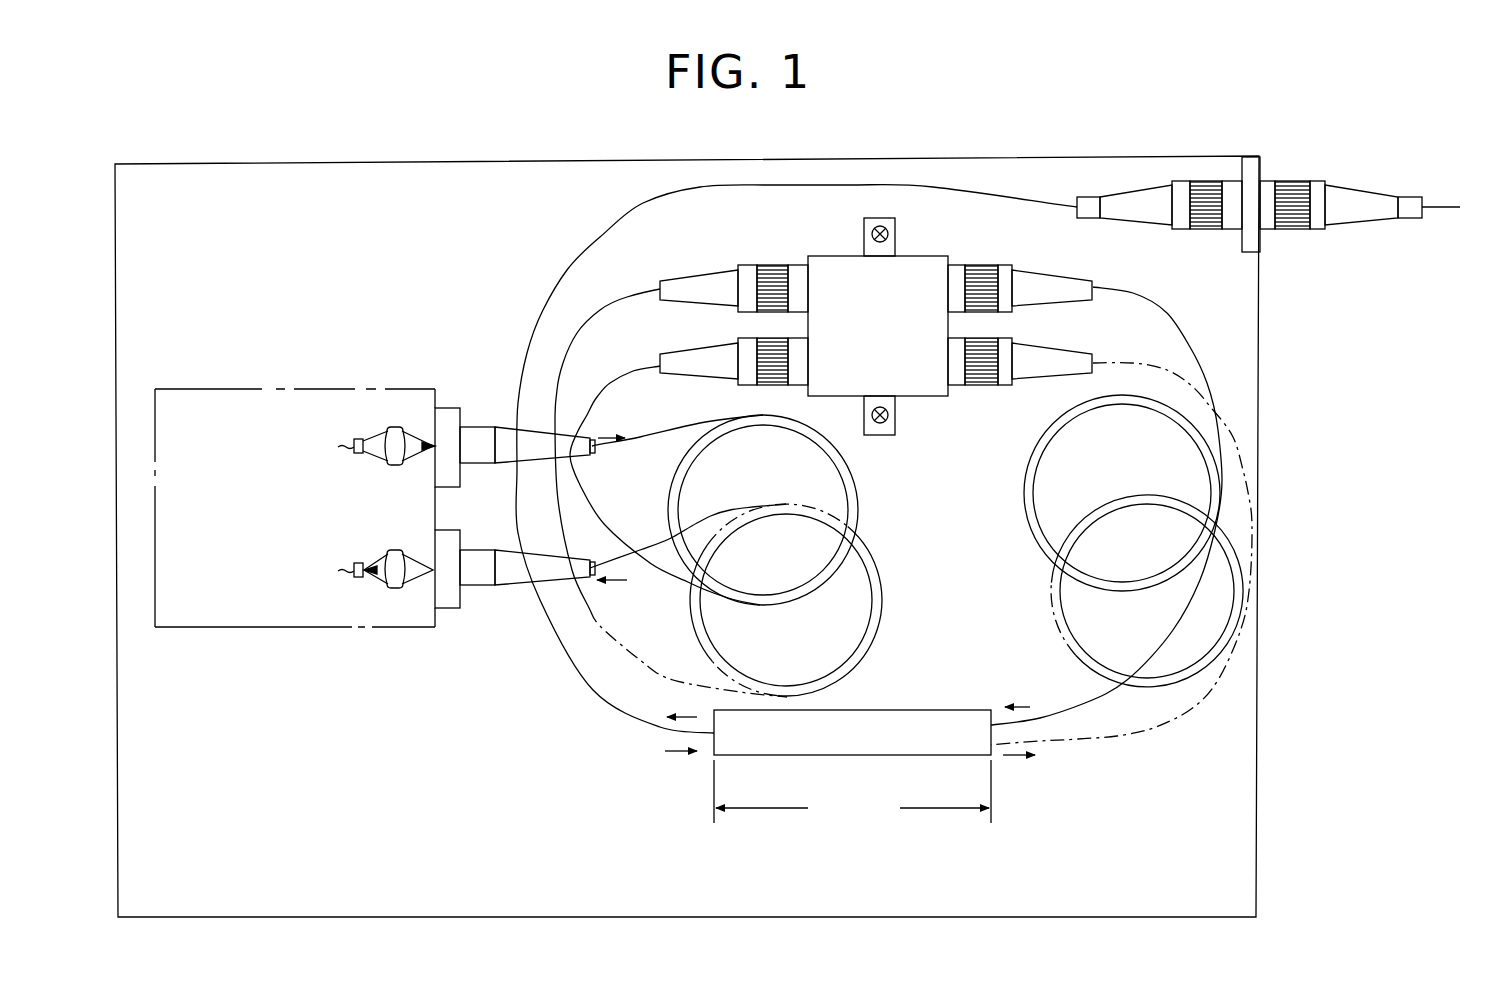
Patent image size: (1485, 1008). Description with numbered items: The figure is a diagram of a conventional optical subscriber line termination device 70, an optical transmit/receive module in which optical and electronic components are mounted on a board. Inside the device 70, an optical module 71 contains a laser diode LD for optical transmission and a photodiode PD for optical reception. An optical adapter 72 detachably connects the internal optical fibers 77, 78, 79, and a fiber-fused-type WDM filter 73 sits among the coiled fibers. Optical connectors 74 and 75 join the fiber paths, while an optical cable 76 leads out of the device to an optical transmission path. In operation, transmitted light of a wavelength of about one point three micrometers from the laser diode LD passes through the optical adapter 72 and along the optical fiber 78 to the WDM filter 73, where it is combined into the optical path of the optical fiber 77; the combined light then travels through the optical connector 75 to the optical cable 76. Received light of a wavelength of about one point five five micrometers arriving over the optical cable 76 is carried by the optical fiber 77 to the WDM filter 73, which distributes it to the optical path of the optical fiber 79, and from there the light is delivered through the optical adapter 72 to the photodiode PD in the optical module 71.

The optical subscriber line termination device 70 is at (278, 163).
The optical module 71 is at (260, 389).
The optical adapter 72 is at (925, 398).
The fiber-fused-type WDM filter 73 is at (915, 710).
The optical connector 74 is at (773, 265).
The optical connector 75 is at (1203, 230).
The optical cable 76 is at (1443, 208).
The optical fiber 77 is at (562, 270).
The optical fiber 78 is at (1168, 631).
The optical fiber 79 is at (1176, 703).